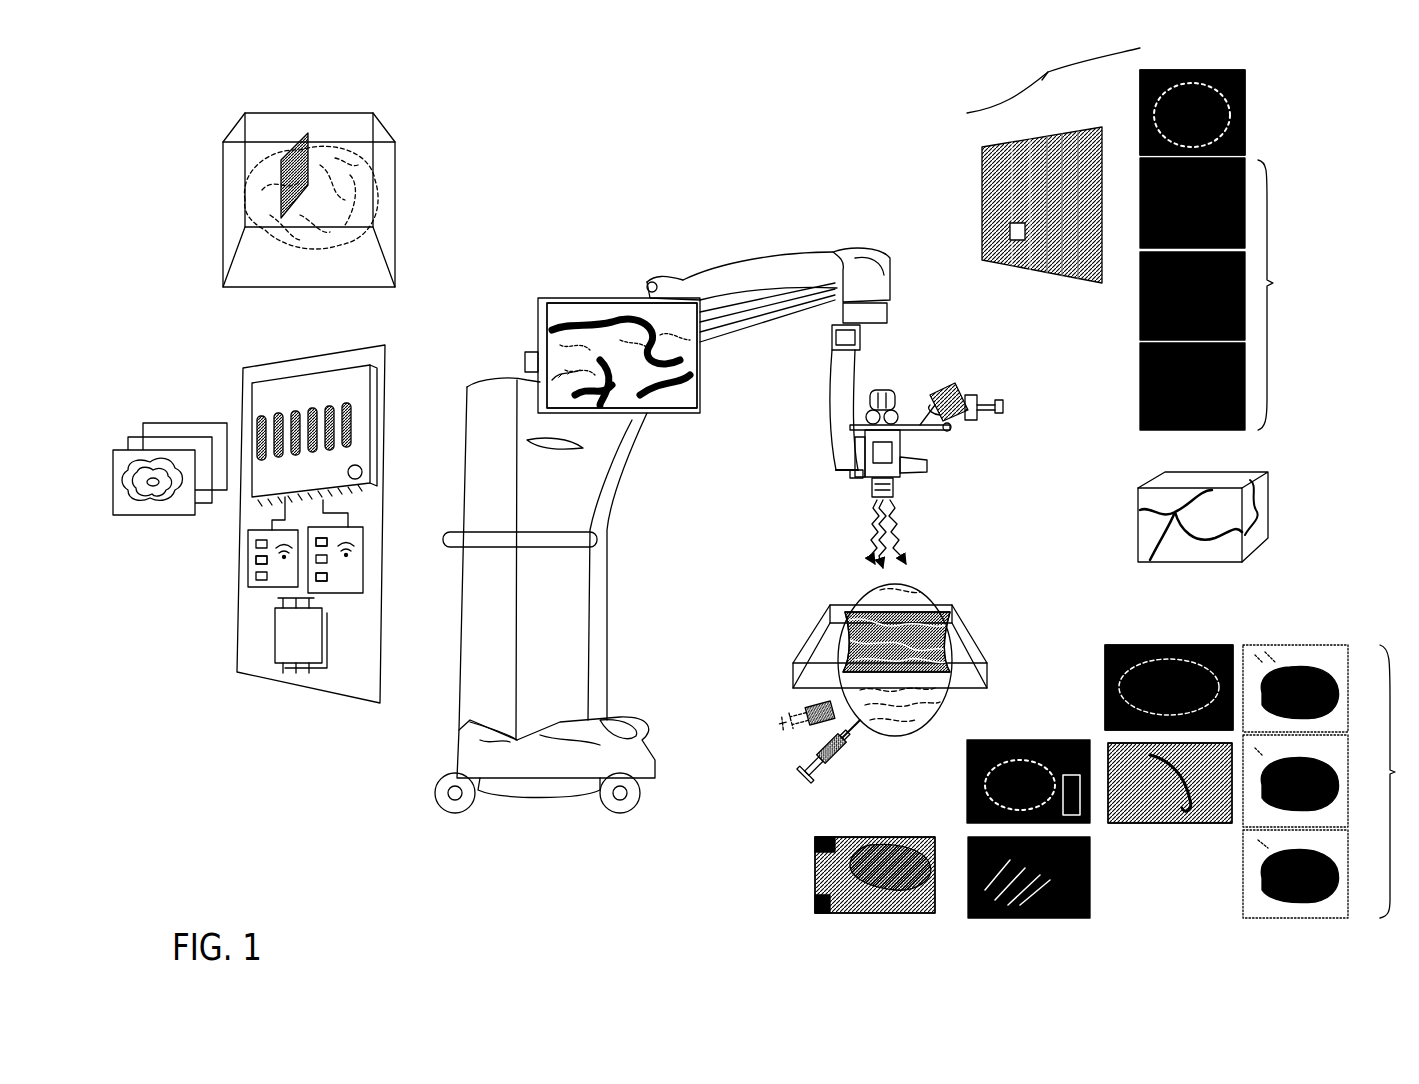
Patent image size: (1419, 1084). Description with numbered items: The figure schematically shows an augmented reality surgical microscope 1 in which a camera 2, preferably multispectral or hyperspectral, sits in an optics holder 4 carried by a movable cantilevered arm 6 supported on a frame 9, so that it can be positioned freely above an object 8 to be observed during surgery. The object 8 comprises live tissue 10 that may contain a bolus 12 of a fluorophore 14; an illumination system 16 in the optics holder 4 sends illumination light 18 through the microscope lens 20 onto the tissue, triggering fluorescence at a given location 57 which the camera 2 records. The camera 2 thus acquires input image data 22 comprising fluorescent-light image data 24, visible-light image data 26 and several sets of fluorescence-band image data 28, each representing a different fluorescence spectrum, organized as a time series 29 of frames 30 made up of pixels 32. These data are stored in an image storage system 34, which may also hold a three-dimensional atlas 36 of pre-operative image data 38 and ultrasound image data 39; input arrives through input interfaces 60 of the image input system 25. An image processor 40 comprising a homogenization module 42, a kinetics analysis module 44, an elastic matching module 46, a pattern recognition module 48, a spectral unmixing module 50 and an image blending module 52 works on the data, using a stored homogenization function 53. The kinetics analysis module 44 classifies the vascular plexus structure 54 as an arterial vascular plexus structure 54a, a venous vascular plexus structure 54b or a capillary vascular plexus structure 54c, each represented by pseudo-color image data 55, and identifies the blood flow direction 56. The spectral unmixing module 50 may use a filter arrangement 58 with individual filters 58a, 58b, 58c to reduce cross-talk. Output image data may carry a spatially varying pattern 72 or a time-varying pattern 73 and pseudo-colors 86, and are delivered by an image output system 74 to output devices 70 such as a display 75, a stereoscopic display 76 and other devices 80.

The augmented reality surgical microscope 1 is at (213, 823).
The camera 2 is at (895, 445).
The optics holder 4 is at (978, 473).
The cantilevered arm 6 is at (768, 255).
The object 8 is at (978, 602).
The frame 9 is at (600, 537).
The live tissue 10 is at (948, 706).
The bolus 12 is at (778, 742).
The fluorophore 14 is at (802, 700).
The illumination system 16 is at (850, 462).
The illumination light 18 is at (905, 530).
The microscope lens 20 is at (868, 500).
The input image data 22 is at (1053, 162).
The fluorescent-light image data 24 is at (1281, 295).
The image input system 25 is at (248, 540).
The visible-light image data 26 is at (1248, 88).
The fluorescence-band image data 28 is at (1140, 232).
The time series 29 is at (1077, 292).
The frames 30 is at (1052, 130).
The pixels 32 is at (1010, 242).
The image storage system 34 is at (280, 655).
The three-dimensional atlas 36 is at (404, 128).
The pre-operative image data 38 is at (375, 208).
The ultrasound image data 39 is at (1133, 535).
The image processor 40 is at (372, 376).
The homogenization module 42 is at (250, 430).
The kinetics analysis module 44 is at (262, 412).
The elastic matching module 46 is at (279, 410).
The pattern recognition module 48 is at (296, 408).
The spectral unmixing module 50 is at (328, 403).
The image blending module 52 is at (352, 437).
The homogenization function 53 is at (118, 436).
The vascular plexus structure 54 is at (1248, 128).
The arterial vascular plexus structure 54a is at (1332, 646).
The venous vascular plexus structure 54b is at (1243, 812).
The capillary vascular plexus structure 54c is at (1243, 880).
The pseudo-color image data 55 is at (855, 630).
The blood flow direction 56 is at (905, 610).
The location in object or live tissue 57 is at (895, 491).
The filter 58 is at (1090, 655).
The filter 58a is at (1120, 646).
The filter 58b is at (1092, 886).
The filter 58c is at (1160, 823).
The input interface 60 is at (248, 558).
The output devices 70 is at (540, 330).
The spatially varying pattern 72 is at (990, 918).
The time-varying pattern 73 is at (1053, 742).
The image output system 74 is at (355, 562).
The display 75 is at (560, 300).
The stereoscopic display 76 is at (940, 384).
The other output devices 80 is at (363, 534).
The pseudo-color 86 is at (1335, 680).